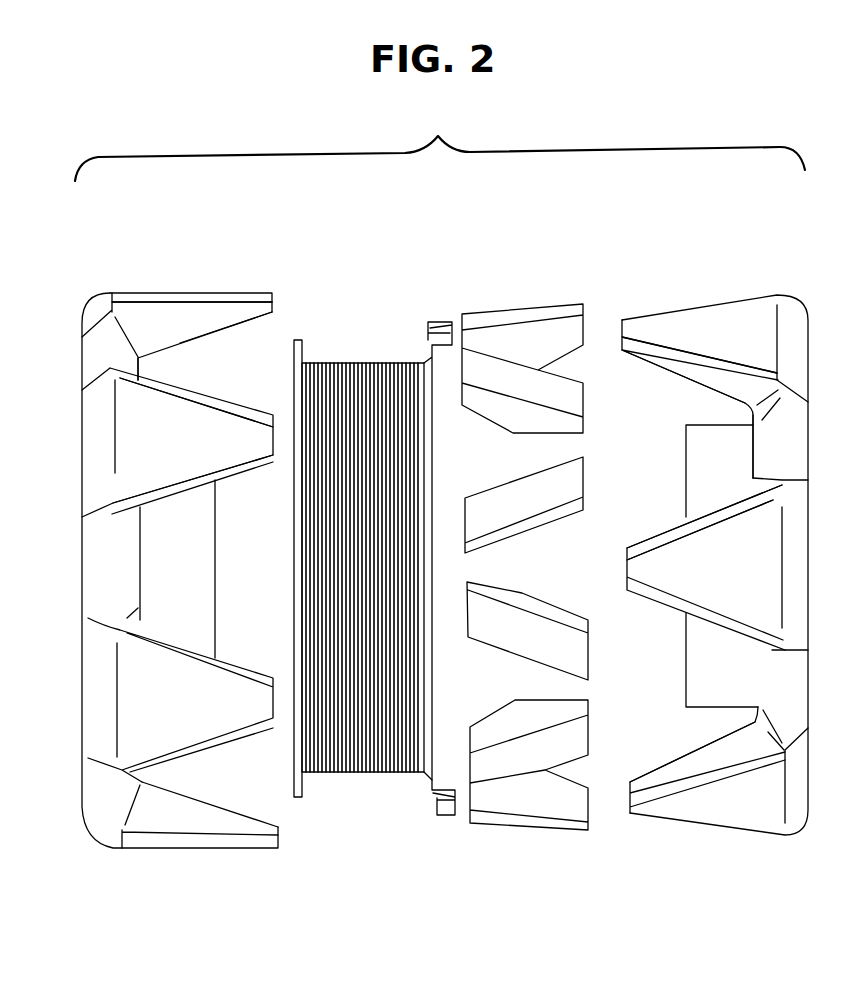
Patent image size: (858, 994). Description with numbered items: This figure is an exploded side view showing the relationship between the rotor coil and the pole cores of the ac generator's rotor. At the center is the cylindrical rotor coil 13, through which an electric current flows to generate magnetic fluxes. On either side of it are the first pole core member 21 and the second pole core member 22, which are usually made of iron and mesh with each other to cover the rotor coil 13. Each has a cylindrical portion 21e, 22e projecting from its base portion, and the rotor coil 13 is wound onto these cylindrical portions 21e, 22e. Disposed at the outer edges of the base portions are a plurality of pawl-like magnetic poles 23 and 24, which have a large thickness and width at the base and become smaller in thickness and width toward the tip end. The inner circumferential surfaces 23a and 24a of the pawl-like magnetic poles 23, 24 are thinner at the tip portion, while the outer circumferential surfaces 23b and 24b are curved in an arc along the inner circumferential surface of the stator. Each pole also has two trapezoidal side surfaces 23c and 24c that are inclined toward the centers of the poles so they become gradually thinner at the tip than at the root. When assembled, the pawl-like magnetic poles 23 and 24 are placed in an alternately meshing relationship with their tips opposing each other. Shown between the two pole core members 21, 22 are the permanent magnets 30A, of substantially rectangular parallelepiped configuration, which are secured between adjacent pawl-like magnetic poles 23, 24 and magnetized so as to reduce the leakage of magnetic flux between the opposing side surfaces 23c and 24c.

The rotor coil 13 is at (340, 365).
The first pole core member 21 is at (209, 557).
The cylindrical portion 21e is at (203, 583).
The second pole core member 22 is at (701, 559).
The cylindrical portion 22e is at (697, 680).
The pawl-like magnetic poles 23 is at (275, 292).
The inner circumferential surface 23a is at (257, 316).
The outer circumferential surface 23b is at (205, 293).
The side surface 23c is at (166, 332).
The pawl-like magnetic poles 24 is at (614, 322).
The inner circumferential surface 24a is at (660, 375).
The outer circumferential surface 24b is at (688, 322).
The side surface 24c is at (697, 380).
The permanent magnets 30A is at (522, 316).